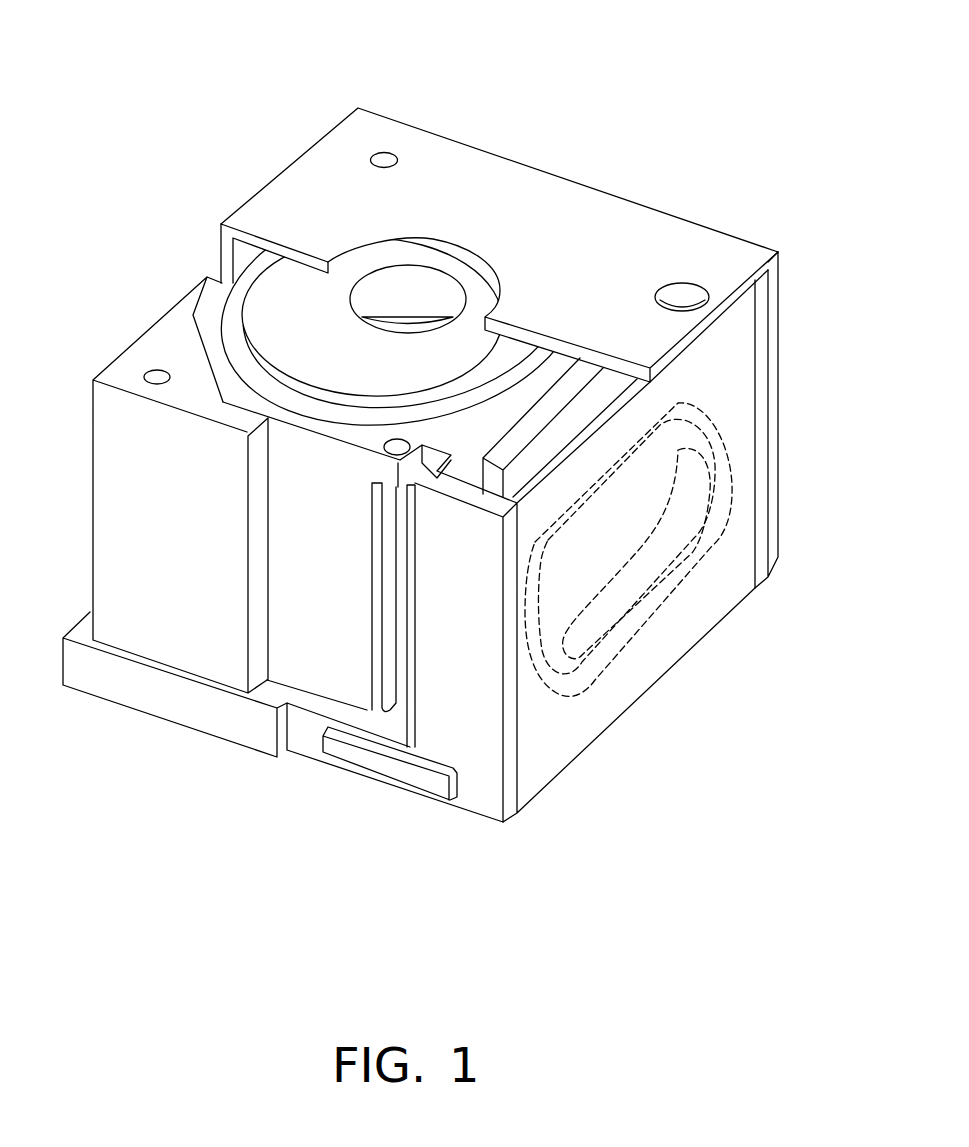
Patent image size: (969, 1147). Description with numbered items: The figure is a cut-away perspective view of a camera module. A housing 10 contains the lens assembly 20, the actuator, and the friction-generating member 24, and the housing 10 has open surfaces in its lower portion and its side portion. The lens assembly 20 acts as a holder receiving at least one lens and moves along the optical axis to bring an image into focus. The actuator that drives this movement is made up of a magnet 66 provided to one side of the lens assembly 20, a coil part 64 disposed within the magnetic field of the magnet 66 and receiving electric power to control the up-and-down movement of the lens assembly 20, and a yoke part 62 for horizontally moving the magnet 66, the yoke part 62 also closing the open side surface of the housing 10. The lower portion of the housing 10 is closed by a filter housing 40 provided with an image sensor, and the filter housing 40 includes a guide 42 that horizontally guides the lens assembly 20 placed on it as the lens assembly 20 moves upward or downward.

The housing 10 is at (537, 187).
The lens assembly 20 is at (297, 280).
The friction-generating member 24 is at (393, 703).
The filter housing 40 is at (438, 836).
The guide 42 is at (100, 522).
The yoke part 62 is at (593, 723).
The coil part 64 is at (660, 607).
The magnet 66 is at (603, 377).